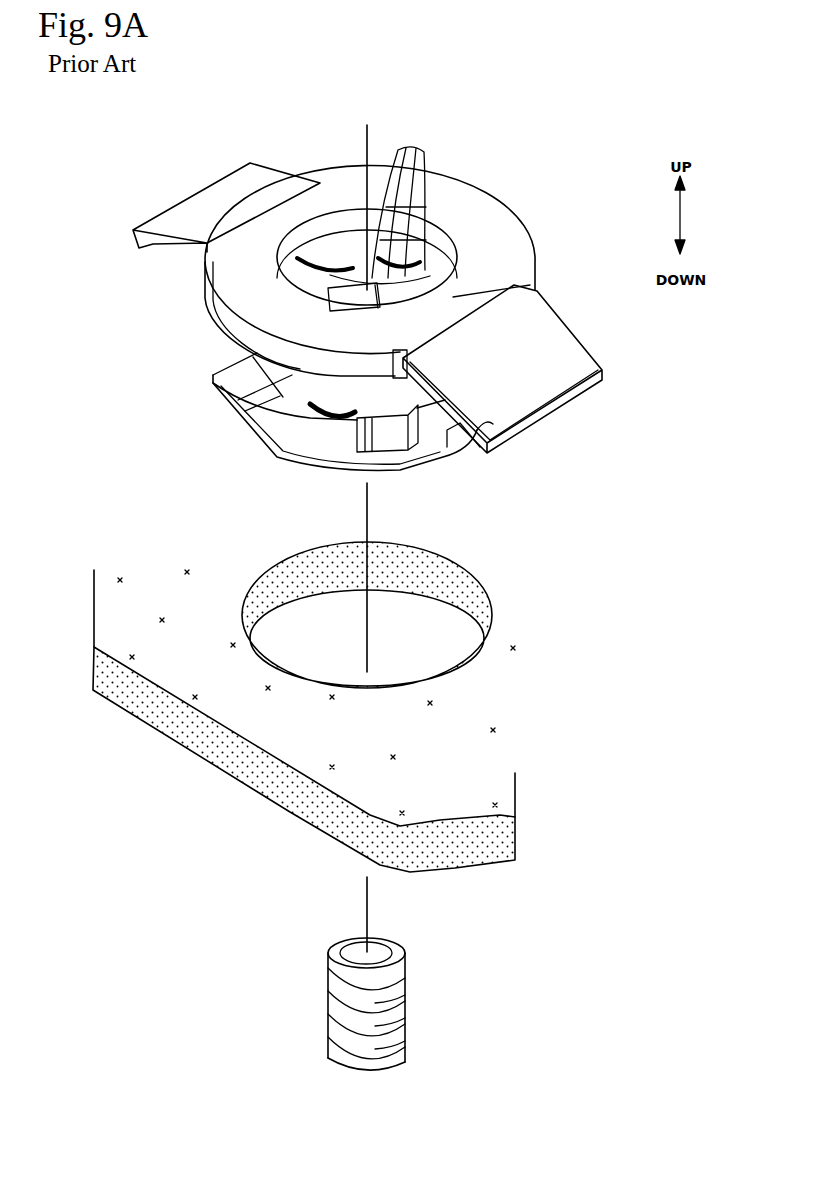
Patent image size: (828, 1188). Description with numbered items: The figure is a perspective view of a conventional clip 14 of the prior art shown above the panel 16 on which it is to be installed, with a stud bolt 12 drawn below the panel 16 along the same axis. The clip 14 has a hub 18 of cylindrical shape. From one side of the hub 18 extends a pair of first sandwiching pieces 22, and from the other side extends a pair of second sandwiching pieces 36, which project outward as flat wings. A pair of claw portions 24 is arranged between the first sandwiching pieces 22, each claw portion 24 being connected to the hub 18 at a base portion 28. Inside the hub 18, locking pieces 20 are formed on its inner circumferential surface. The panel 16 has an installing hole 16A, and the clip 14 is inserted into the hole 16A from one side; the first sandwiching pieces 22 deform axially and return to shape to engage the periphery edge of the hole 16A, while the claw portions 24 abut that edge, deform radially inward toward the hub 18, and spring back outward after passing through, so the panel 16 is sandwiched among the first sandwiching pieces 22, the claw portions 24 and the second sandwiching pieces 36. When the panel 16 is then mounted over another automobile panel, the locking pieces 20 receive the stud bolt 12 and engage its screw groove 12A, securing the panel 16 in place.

The stud bolt 12 is at (408, 1004).
The screw groove 12A is at (408, 976).
The clip 14 is at (379, 309).
The panel 16 is at (227, 707).
The installing hole 16A is at (463, 563).
The hub 18 is at (258, 403).
The locking pieces 20 is at (418, 156).
The first sandwiching pieces 22 is at (240, 353).
The claw portions 24 is at (287, 458).
The base portion 28 is at (420, 424).
The second sandwiching pieces 36 is at (198, 190).